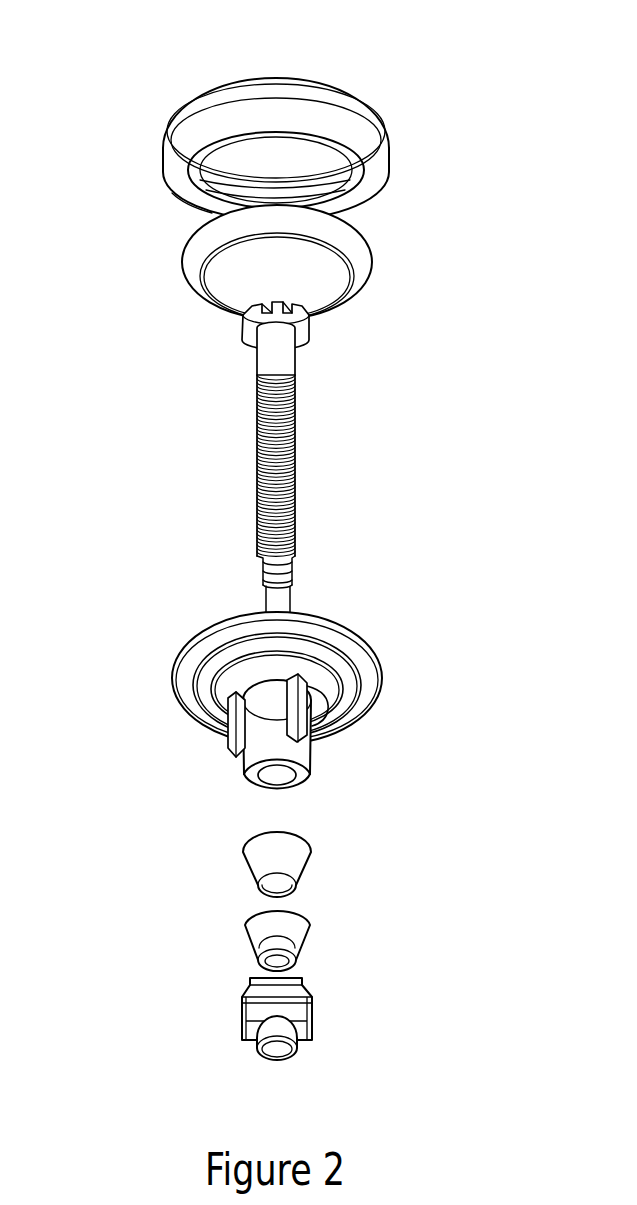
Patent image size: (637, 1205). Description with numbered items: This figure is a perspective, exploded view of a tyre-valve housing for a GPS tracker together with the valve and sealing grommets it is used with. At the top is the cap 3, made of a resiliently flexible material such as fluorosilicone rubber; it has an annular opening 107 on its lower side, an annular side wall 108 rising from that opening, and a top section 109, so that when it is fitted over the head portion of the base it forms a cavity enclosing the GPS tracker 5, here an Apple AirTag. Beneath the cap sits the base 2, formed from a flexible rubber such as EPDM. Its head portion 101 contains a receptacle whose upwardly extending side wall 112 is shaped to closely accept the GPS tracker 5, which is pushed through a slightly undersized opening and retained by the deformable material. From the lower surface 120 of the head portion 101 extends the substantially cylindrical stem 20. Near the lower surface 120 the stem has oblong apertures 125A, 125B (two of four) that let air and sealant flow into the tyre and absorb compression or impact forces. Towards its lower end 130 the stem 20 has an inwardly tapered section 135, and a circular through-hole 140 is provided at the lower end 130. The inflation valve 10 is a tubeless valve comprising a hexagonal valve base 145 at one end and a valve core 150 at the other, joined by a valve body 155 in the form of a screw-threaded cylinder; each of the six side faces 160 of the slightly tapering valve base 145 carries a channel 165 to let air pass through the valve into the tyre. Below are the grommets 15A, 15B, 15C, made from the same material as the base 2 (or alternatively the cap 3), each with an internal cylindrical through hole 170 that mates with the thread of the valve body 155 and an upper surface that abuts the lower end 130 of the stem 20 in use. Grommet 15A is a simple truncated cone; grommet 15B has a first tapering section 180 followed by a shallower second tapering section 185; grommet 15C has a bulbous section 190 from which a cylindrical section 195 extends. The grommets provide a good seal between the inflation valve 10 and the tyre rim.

The base 2 is at (280, 706).
The cap 3 is at (267, 128).
The GPS tracker 5 is at (340, 280).
The inflation valve 10 is at (299, 419).
The grommet 15A is at (303, 858).
The grommet 15B is at (285, 928).
The grommet 15C is at (288, 1023).
The stem 20 is at (280, 750).
The head portion 101 is at (188, 672).
The opening 107 is at (320, 163).
The side wall 108 is at (175, 159).
The top section 109 is at (324, 84).
The side wall 112 is at (352, 638).
The lower surface 120 is at (203, 697).
The oblong aperture 125A is at (232, 748).
The oblong aperture 125B is at (292, 722).
The lower end 130 is at (260, 782).
The inwardly tapered section 135 is at (311, 758).
The circular through-hole 140 is at (283, 778).
The valve base 145 is at (308, 338).
The valve core 150 is at (283, 602).
The valve body 155 is at (298, 514).
The side face 160 is at (299, 292).
The channel 165 is at (270, 306).
The internal cylindrical through hole 170 is at (282, 885).
The first tapering section 180 is at (255, 928).
The second tapering section 185 is at (263, 952).
The bulbous section 190 is at (250, 1008).
The cylindrical section 195 is at (268, 1032).